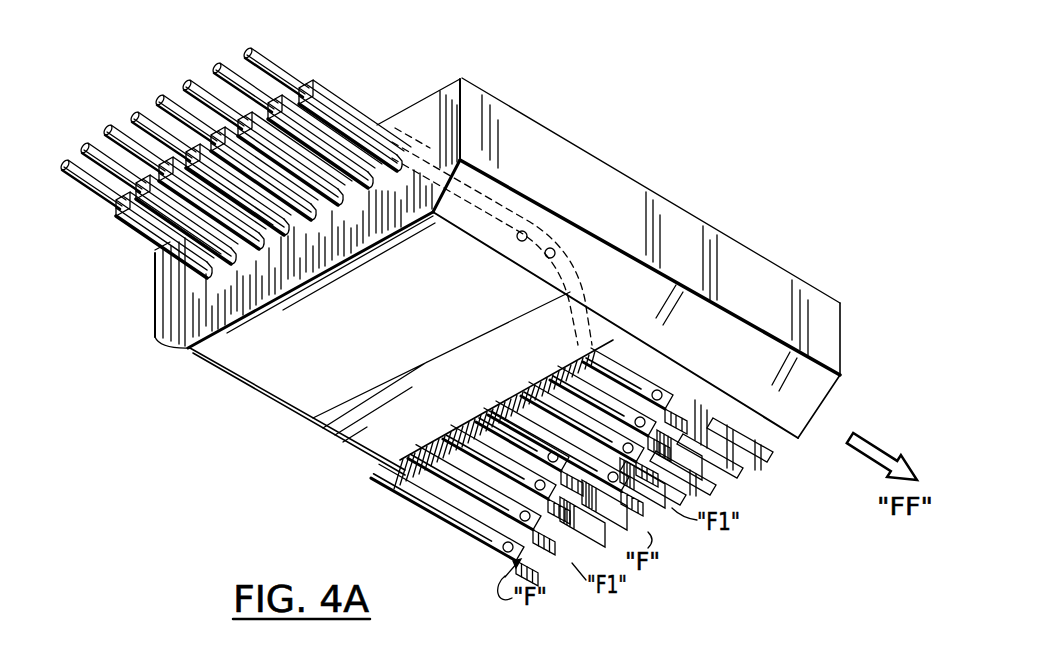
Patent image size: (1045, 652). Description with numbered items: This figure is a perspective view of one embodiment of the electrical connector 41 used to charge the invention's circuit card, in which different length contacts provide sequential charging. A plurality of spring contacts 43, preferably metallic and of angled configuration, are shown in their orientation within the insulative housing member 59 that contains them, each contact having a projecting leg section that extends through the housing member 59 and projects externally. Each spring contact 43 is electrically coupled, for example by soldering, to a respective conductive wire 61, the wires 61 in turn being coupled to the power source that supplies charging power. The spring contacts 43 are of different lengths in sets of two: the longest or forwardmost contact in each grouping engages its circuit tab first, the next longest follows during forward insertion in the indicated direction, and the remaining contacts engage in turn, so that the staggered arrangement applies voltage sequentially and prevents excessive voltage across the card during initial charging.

The electrical connector 41 is at (790, 252).
The spring contacts 43 is at (460, 492).
The insulative housing member 59 is at (700, 220).
The conductive wire 61 is at (262, 60).